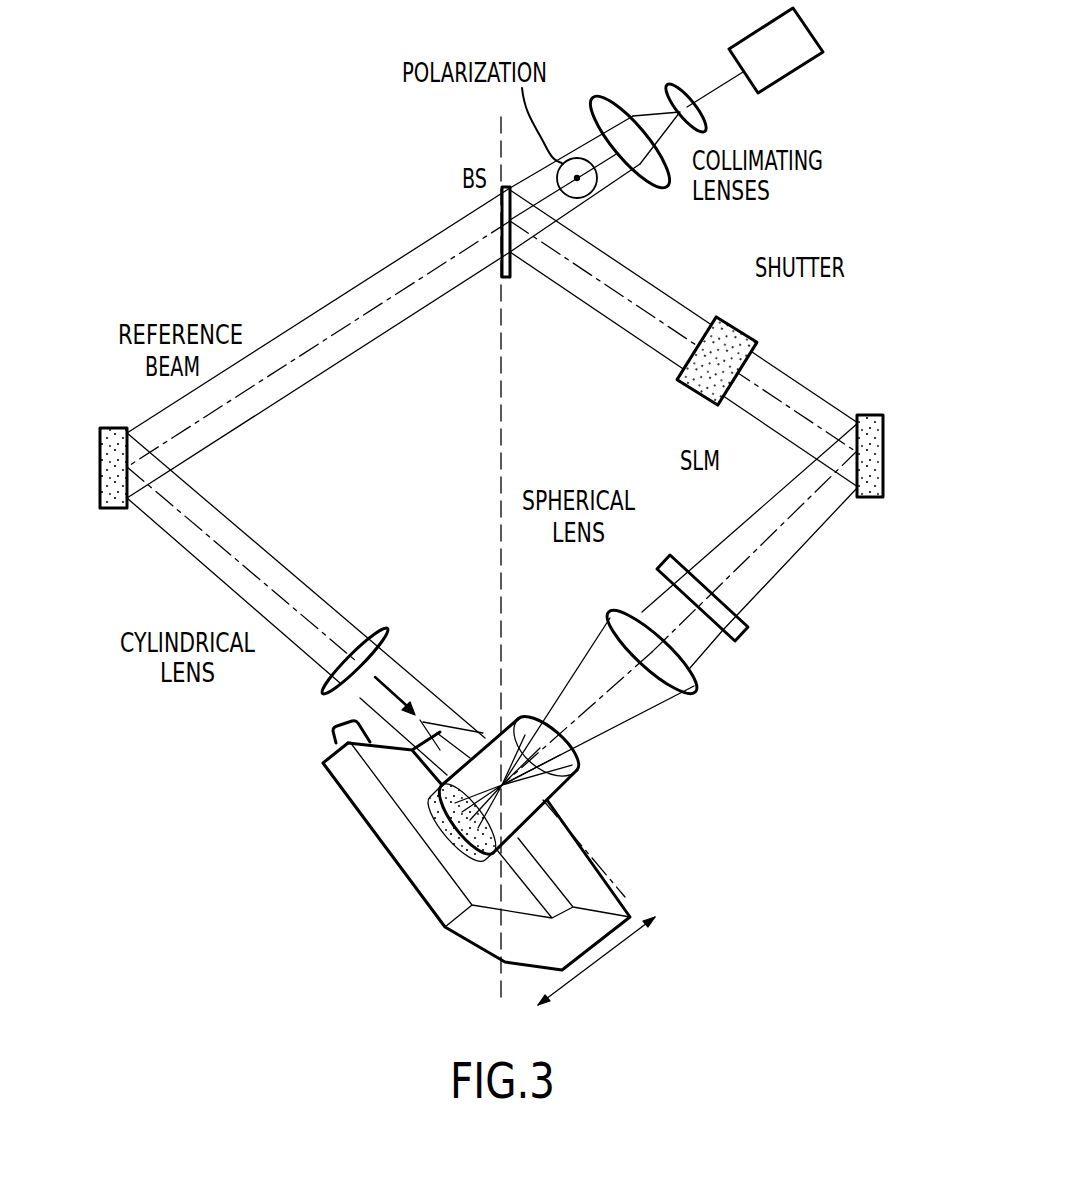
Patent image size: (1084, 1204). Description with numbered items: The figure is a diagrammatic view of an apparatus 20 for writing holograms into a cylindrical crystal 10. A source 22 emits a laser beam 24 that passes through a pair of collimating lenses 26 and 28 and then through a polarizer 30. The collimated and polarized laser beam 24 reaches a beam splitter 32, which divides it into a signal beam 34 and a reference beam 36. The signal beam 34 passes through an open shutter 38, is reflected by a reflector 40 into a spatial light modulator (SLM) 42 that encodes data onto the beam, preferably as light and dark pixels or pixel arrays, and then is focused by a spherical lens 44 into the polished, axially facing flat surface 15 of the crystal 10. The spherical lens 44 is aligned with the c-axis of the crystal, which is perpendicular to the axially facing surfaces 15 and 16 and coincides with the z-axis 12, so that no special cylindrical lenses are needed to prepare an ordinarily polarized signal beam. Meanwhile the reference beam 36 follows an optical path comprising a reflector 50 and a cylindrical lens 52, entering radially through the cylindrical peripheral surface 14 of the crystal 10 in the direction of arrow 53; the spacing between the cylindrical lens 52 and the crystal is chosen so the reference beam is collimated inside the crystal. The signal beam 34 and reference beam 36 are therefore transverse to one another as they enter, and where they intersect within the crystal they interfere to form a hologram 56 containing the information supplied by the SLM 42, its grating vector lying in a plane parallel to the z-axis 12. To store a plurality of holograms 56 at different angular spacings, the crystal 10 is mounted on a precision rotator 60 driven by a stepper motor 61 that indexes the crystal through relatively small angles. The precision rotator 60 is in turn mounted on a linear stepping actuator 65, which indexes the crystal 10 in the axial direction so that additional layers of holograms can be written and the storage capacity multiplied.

The crystal 10 is at (530, 705).
The z-axis 12 is at (600, 697).
The cylindrical peripheral surface 14 is at (548, 800).
The axially facing flat surface 15 is at (567, 770).
The axially facing surface 16 is at (427, 802).
The apparatus 20 is at (294, 285).
The source 22 is at (778, 62).
The laser beam 24 is at (717, 88).
The collimating lens 26 is at (673, 86).
The collimating lens 28 is at (660, 180).
The polarizer 30 is at (580, 180).
The beam splitter 32 is at (500, 215).
The signal beam 34 is at (613, 315).
The reference beam 36 is at (368, 335).
The shutter 38 is at (740, 331).
The reflector 40 is at (870, 416).
The spatial light modulator (SLM) 42 is at (670, 560).
The spherical lens 44 is at (615, 614).
The reflector 50 is at (113, 508).
The cylindrical lens 52 is at (325, 690).
The arrow 53 is at (397, 695).
The hologram 56 is at (470, 752).
The precision rotator 60 is at (430, 815).
The stepper motor 61 is at (333, 735).
The linear stepping actuator 65 is at (495, 947).